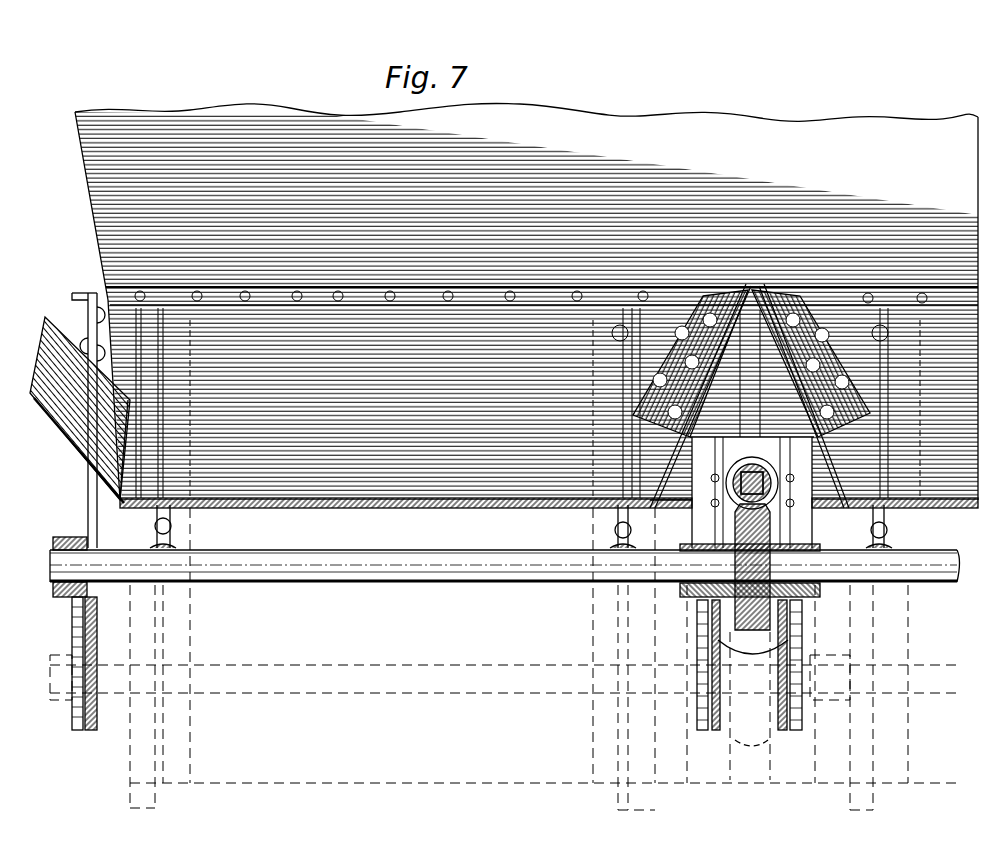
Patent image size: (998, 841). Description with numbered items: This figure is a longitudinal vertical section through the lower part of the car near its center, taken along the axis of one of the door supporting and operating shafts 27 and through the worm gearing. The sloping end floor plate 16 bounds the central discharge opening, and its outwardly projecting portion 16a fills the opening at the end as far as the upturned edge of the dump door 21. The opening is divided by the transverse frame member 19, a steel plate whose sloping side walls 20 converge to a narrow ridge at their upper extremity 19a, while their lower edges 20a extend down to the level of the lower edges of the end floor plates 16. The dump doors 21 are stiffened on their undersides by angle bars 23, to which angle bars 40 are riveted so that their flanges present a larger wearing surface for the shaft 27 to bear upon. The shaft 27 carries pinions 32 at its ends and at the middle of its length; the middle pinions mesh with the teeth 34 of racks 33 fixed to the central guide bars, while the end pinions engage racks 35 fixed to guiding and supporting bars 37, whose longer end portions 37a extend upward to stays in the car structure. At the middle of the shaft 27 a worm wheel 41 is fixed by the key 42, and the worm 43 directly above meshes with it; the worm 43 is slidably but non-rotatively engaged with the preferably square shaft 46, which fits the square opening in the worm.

The sloping end floor plate 16 is at (45, 416).
The outwardly projecting portion 16a is at (130, 496).
The transverse frame member 19 is at (760, 290).
The upper extremity 19a is at (747, 290).
The sloping side wall 20 is at (770, 368).
The lower edge 20a is at (640, 495).
The dump door 21 is at (335, 508).
The angle bar 23 is at (150, 510).
The supporting and operating shaft 27 is at (348, 562).
The pinion 32 is at (75, 516).
The rack 33 is at (815, 597).
The teeth 34 is at (806, 606).
The rack 35 is at (72, 604).
The guiding and supporting bar 37 is at (91, 731).
The end portion 37a is at (88, 480).
The angle bar 40 is at (180, 548).
The worm wheel 41 is at (753, 690).
The key 42 is at (692, 584).
The worm 43 is at (752, 462).
The shaft 46 is at (746, 472).